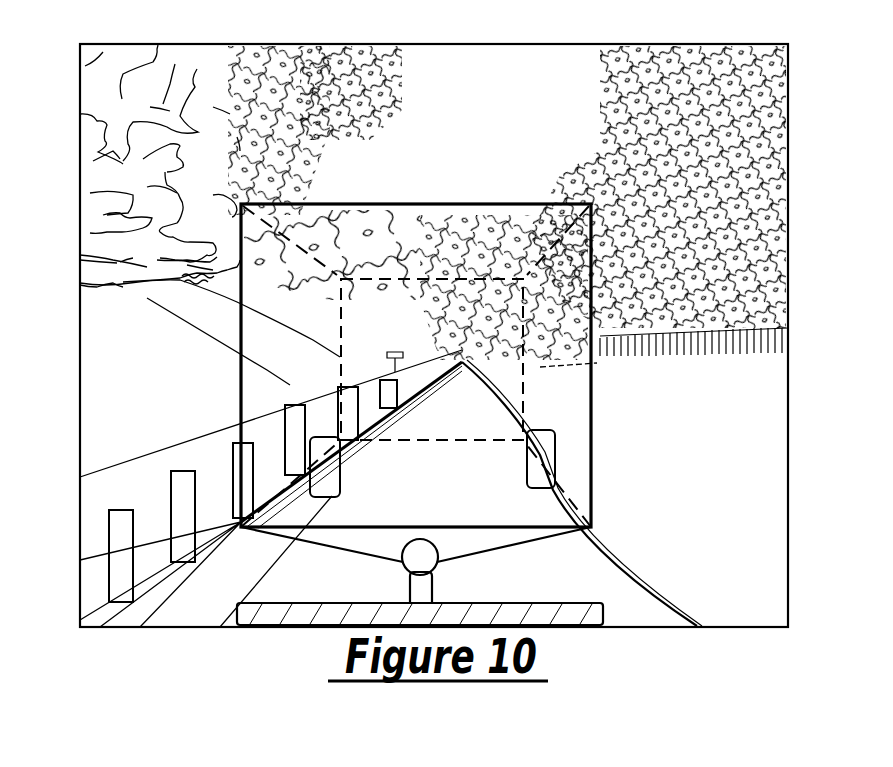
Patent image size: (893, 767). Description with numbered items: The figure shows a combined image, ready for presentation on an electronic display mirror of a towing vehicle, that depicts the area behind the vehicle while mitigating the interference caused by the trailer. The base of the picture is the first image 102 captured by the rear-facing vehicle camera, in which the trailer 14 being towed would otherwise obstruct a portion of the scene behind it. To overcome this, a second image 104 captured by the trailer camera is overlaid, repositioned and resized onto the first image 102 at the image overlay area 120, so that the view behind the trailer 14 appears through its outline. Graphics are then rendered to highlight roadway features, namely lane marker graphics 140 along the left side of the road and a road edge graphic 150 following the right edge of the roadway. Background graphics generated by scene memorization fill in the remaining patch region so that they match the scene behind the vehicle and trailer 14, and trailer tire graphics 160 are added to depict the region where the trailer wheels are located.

The first image 102 is at (80, 143).
The trailer 14 is at (476, 203).
The second image 104 is at (432, 385).
The image overlay area 120 is at (422, 440).
The lane marker graphics 140 is at (150, 480).
The trailer tire graphics 160 is at (553, 430).
The road edge graphic 150 is at (660, 592).